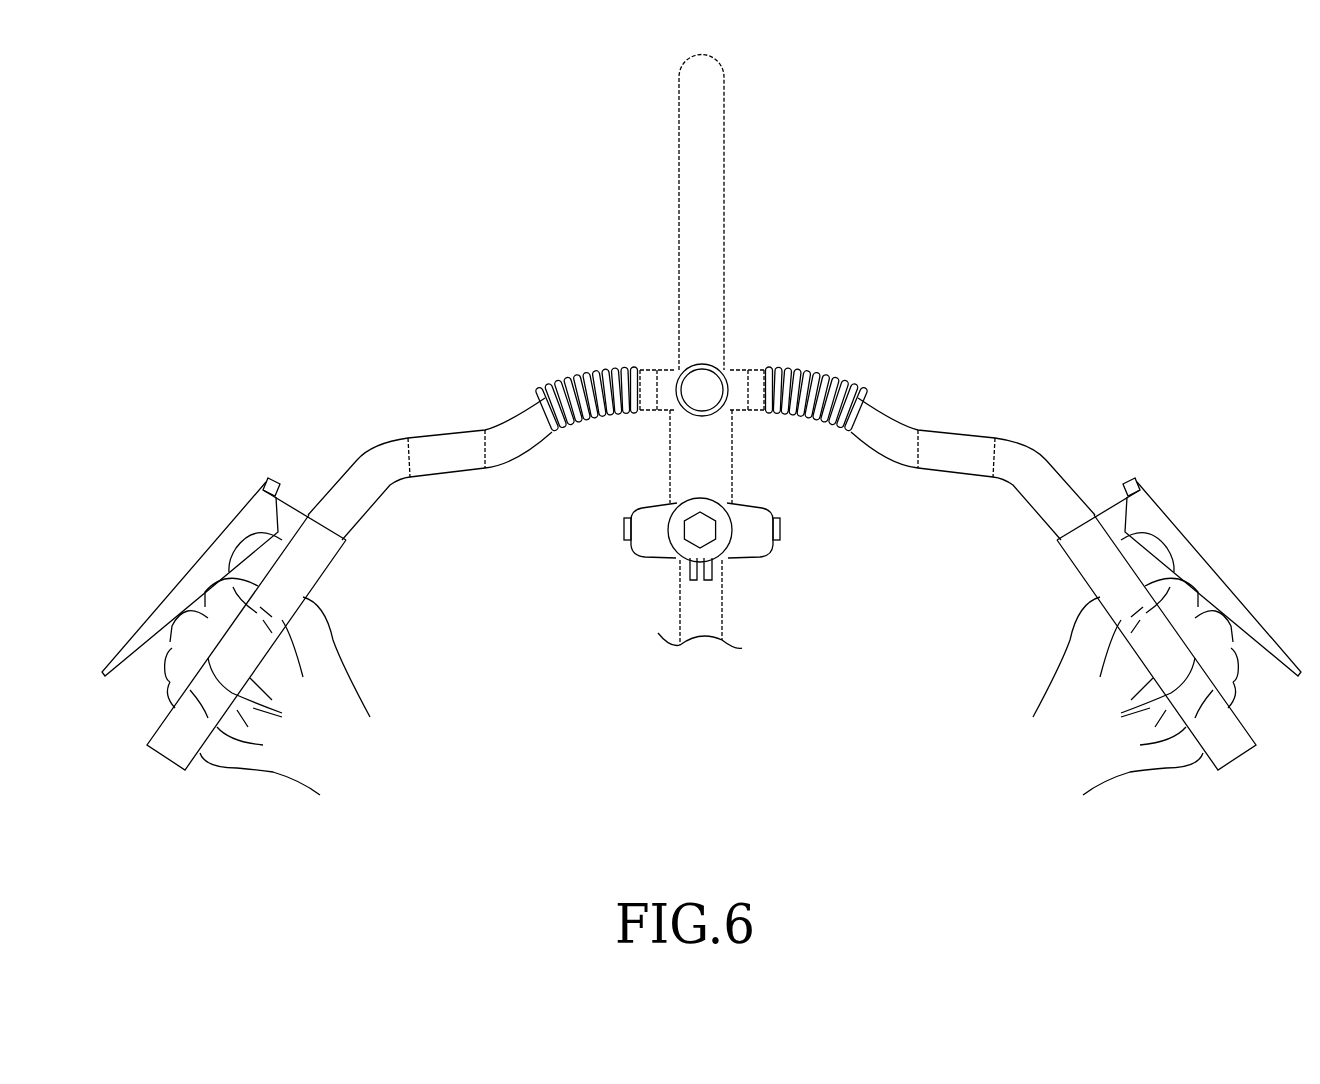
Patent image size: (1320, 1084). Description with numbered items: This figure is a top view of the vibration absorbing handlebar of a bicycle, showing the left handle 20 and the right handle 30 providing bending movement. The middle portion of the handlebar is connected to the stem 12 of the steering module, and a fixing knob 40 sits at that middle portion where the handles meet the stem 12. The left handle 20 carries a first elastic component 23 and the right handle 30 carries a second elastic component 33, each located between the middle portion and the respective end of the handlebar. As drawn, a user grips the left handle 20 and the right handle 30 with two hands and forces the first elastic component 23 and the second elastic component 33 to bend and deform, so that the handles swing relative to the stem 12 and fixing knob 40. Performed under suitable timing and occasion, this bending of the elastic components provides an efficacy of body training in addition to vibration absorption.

The stem 12 is at (722, 457).
The left handle 20 is at (382, 441).
The first elastic component 23 is at (582, 388).
The right handle 30 is at (1039, 451).
The second elastic component 33 is at (828, 380).
The fixing knob 40 is at (706, 385).